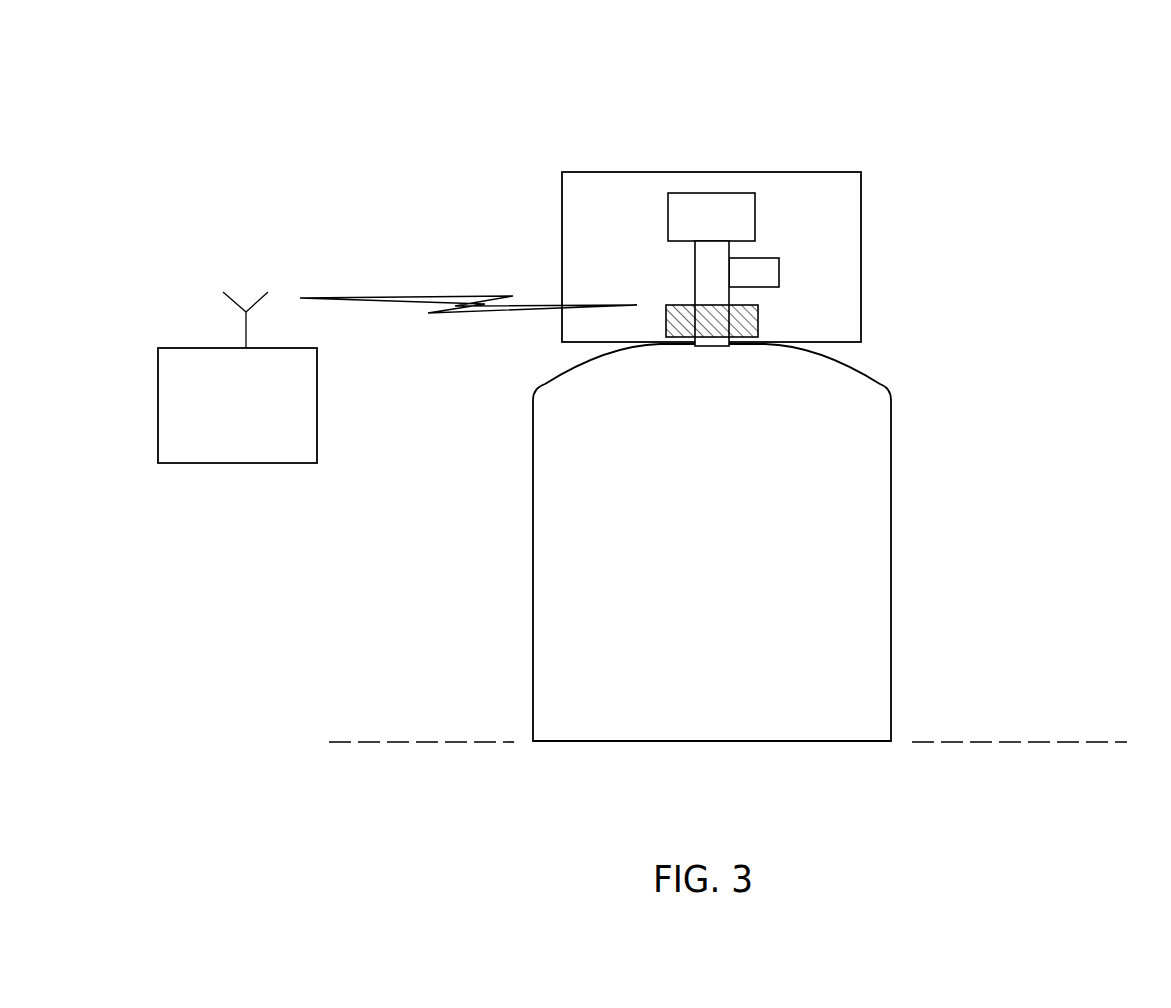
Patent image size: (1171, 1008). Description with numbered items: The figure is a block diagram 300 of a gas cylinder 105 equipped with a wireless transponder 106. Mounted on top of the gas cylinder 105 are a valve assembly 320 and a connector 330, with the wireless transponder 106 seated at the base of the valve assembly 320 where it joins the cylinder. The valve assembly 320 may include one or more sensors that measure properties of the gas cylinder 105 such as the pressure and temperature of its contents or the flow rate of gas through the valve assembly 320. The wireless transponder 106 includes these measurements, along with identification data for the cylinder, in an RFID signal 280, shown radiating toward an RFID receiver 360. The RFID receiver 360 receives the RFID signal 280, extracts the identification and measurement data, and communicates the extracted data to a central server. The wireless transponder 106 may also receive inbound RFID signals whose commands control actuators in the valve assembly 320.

The block diagram 300 is at (1087, 113).
The valve assembly 320 is at (710, 193).
The connector 330 is at (779, 270).
The wireless transponder 106 is at (666, 305).
The RFID signal 280 is at (468, 285).
The gas cylinder 105 is at (891, 535).
The RFID receiver 360 is at (215, 444).